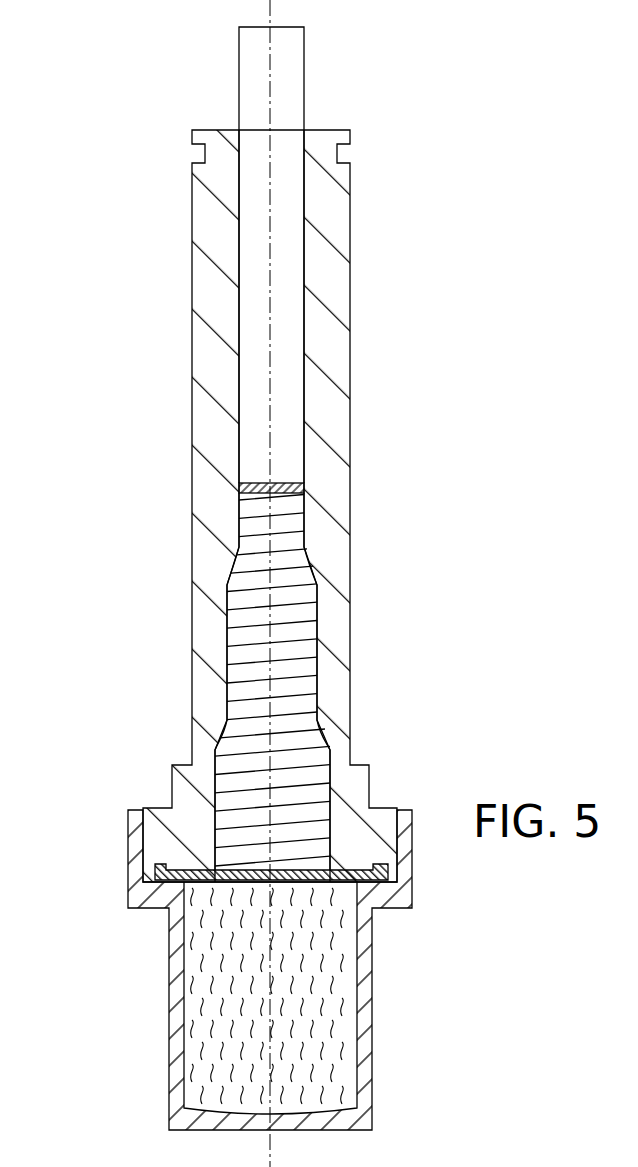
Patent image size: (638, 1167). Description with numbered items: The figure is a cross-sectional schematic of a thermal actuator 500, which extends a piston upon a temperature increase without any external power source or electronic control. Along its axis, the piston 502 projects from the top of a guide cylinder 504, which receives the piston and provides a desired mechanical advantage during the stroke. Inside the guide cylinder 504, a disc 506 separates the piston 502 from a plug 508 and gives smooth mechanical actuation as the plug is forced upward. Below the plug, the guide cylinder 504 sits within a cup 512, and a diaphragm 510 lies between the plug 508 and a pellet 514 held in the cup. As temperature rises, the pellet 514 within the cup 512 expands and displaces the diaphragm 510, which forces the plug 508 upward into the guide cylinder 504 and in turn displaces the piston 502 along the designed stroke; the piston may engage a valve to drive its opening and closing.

The thermal actuator 500 is at (519, 113).
The piston 502 is at (305, 57).
The guide cylinder 504 is at (352, 348).
The disc 506 is at (305, 482).
The plug 508 is at (307, 592).
The diaphragm 510 is at (163, 874).
The cup 512 is at (130, 816).
The pellet 514 is at (343, 1047).